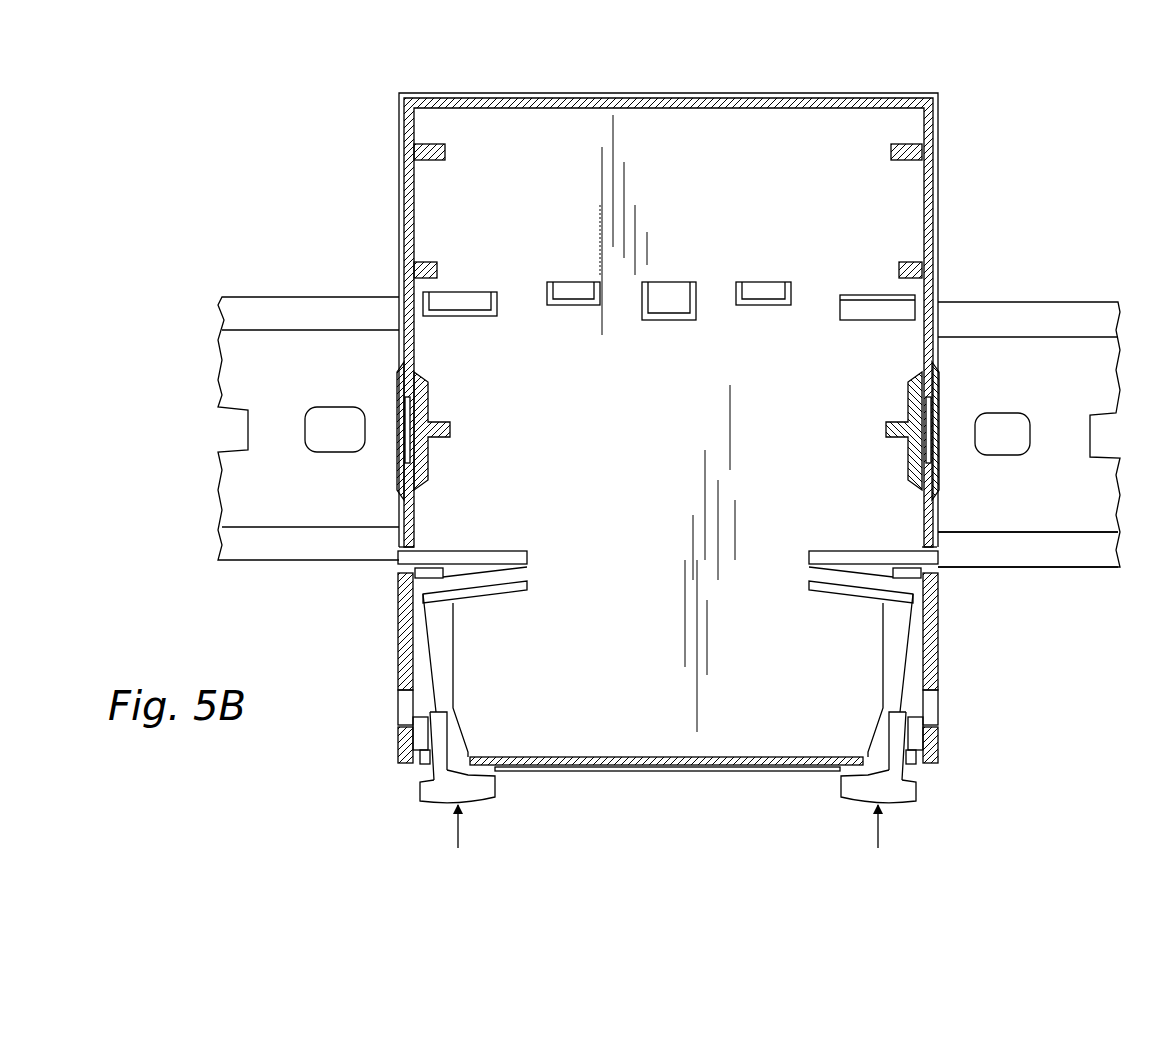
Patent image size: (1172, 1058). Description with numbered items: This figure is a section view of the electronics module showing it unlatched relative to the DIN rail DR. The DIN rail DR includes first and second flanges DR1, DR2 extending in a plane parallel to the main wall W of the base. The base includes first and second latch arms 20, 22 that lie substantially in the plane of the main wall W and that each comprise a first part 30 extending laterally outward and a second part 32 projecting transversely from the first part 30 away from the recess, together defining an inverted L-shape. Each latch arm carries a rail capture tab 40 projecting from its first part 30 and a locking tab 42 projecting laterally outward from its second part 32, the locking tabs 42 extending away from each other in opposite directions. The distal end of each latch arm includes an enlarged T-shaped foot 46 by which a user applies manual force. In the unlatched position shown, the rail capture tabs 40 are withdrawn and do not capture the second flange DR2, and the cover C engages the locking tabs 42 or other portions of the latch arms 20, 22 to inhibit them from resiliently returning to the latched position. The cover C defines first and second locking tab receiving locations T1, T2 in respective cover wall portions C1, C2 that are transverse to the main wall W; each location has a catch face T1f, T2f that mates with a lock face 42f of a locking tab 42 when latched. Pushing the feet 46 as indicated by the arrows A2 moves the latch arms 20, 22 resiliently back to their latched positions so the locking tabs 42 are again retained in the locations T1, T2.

The first latch arm 20 is at (898, 682).
The second latch arm 22 is at (438, 682).
The first part 30 is at (487, 578).
The second part 32 is at (440, 752).
The rail capture tab 40 is at (430, 568).
The locking tab 42 is at (422, 733).
The lock face 42f is at (425, 756).
The foot 46 is at (498, 790).
The arrows A2 is at (450, 824).
The cover C is at (386, 598).
The first cover wall portion C1 is at (940, 625).
The second cover wall portion C2 is at (405, 635).
The first locking tab receiving location T1 is at (940, 703).
The first catch face T1f is at (936, 722).
The second locking tab receiving location T2 is at (403, 703).
The second catch face T2f is at (400, 722).
The DIN rail DR is at (1065, 375).
The first flange DR1 is at (880, 305).
The second flange DR2 is at (1045, 548).
The main wall W is at (678, 407).